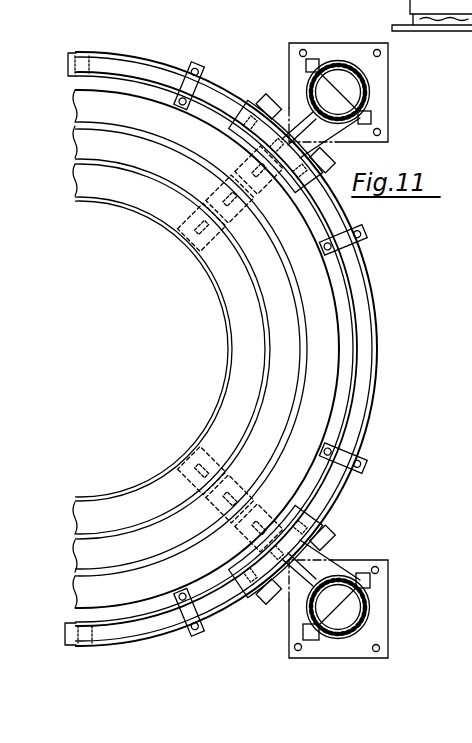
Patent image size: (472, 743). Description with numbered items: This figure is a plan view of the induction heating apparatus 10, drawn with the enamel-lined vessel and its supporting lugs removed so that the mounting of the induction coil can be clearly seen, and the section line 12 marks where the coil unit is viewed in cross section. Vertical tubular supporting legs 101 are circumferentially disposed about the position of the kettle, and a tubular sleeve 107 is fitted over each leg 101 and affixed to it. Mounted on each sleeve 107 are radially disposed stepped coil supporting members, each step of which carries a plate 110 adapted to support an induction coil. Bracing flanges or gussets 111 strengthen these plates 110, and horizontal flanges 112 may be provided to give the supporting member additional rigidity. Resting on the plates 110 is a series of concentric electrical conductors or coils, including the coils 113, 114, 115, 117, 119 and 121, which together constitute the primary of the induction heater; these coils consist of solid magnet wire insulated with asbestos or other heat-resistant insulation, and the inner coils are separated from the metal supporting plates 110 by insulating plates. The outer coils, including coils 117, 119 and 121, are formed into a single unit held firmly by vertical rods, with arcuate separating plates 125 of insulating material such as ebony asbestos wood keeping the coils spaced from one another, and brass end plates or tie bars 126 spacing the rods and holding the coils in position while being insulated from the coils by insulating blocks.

The ring frame assembly 10 is at (390, 40).
The section line 12- 12 is at (214, 58).
The vertical tubular supporting leg 101 is at (338, 66).
The tubular sleeve 107 is at (372, 87).
The plate 110 is at (200, 440).
The bracing flange or gusset 111 is at (175, 470).
The horizontal flange 112 is at (281, 110).
The coil 113 is at (116, 349).
The coil 114 is at (135, 349).
The coil 115 is at (153, 349).
The coil 117 is at (128, 85).
The coil 119 is at (121, 46).
The coil 121 is at (143, 58).
The arcuate separating plate 125 is at (378, 355).
The end plate or tie bar 126 is at (357, 237).